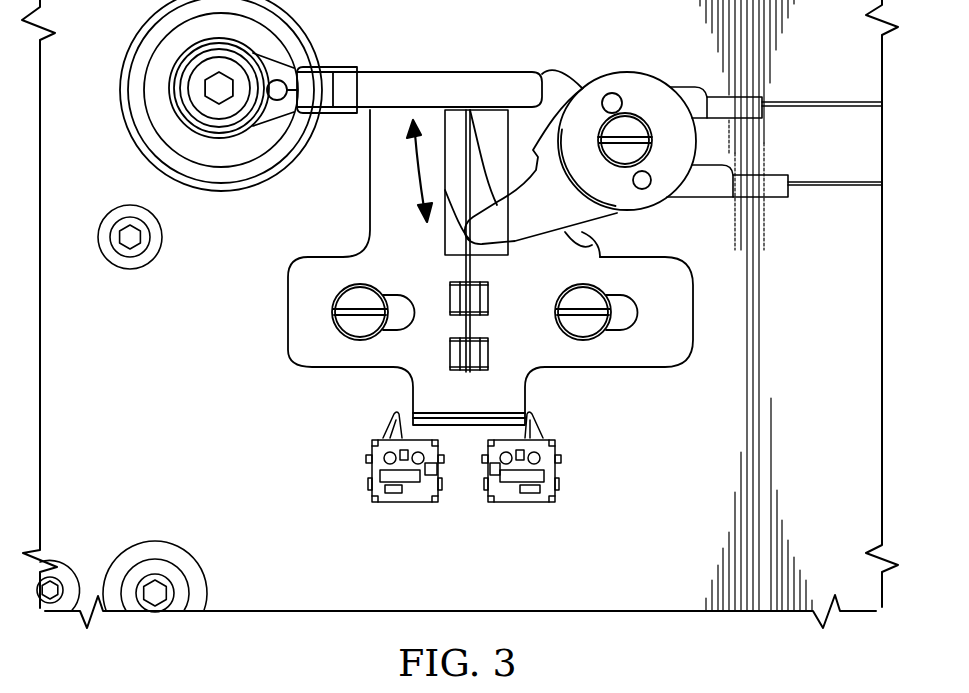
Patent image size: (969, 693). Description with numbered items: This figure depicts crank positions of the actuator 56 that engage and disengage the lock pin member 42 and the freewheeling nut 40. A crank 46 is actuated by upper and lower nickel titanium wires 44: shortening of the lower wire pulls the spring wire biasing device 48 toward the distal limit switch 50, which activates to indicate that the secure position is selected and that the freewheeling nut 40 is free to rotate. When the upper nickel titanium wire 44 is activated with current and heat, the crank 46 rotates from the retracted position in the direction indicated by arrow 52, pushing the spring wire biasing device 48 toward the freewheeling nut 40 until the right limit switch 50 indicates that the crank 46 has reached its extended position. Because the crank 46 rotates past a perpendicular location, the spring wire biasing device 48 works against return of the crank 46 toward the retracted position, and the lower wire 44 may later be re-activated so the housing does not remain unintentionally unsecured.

The freewheeling nut 40 is at (135, 120).
The lock pin member 42 is at (397, 68).
The nickel titanium wire 44 is at (822, 100).
The crank 46 is at (598, 242).
The spring wire biasing device 48 is at (600, 368).
The limit switch 50 is at (404, 505).
The arrow 52 is at (412, 175).
The actuator 56 is at (256, 375).